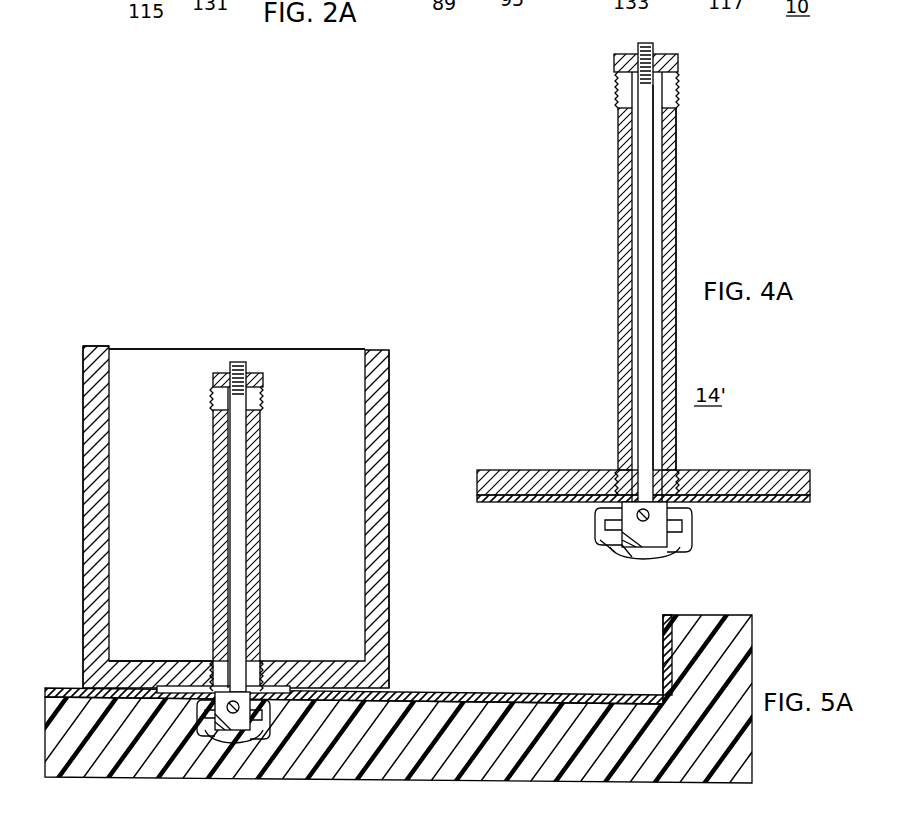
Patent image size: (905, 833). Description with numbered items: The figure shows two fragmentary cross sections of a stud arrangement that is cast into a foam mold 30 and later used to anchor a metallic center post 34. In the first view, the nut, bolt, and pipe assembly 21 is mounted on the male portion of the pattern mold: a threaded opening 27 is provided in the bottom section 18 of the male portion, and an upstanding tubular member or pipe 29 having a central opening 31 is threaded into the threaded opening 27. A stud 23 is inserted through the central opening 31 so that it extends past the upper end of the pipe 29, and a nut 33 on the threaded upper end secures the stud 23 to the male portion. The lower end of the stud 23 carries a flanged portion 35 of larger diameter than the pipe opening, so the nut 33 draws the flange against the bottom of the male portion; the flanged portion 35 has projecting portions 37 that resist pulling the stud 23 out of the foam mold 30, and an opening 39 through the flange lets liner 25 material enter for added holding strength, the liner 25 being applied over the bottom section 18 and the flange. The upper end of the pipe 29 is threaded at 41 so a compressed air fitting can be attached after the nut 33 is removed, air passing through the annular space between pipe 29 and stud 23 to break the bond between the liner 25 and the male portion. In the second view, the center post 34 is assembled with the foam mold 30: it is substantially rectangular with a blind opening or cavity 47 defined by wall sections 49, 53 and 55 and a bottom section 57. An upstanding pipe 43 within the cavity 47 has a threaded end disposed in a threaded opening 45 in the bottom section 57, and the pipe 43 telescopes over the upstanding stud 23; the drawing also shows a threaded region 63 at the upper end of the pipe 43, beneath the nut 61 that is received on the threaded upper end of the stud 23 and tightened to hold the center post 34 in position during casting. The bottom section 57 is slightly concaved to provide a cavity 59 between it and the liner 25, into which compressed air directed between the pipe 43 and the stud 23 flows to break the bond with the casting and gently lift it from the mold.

In FIG. 4A, the stud 23 is at (649, 46).
In FIG. 5A, the stud 23 is at (240, 362).
In FIG. 4A, the nut 33 is at (679, 63).
In FIG. 4A, the threaded upper end of pipe 41 is at (673, 93).
In FIG. 4A, the nut, bolt, and pipe assembly 21 is at (712, 154).
In FIG. 4A, the upstanding tubular member or pipe 29 is at (672, 205).
In FIG. 4A, the central opening 31 is at (655, 232).
In FIG. 4A, the threaded opening 27 is at (630, 470).
In FIG. 4A, the bottom section of male mold portion 18 is at (812, 487).
In FIG. 4A, the liner 25 is at (812, 501).
In FIG. 5A, the liner 25 is at (47, 690).
In FIG. 4A, the flanged portion 35 is at (672, 546).
In FIG. 5A, the flanged portion 35 is at (233, 717).
In FIG. 4A, the opening through flanged portion 39 is at (620, 506).
In FIG. 4A, the projecting portions 37 is at (630, 550).
In FIG. 5A, the foam mold 30 is at (374, 816).
In FIG. 5A, the metallic center post 34 is at (390, 396).
In FIG. 5A, the wall section 49 is at (83, 437).
In FIG. 5A, the wall section 55 is at (110, 349).
In FIG. 5A, the blind opening or cavity 47 is at (346, 356).
In FIG. 5A, the wall section 53 is at (376, 528).
In FIG. 5A, the bottom section of center post 57 is at (152, 665).
In FIG. 5A, the cavity 59 is at (295, 686).
In FIG. 5A, the upstanding pipe 43 is at (262, 446).
In FIG. 5A, the upper threads 63 is at (262, 406).
In FIG. 5A, the threaded opening in bottom section 45 is at (258, 652).
In FIG. 5A, the nut 61 is at (264, 381).